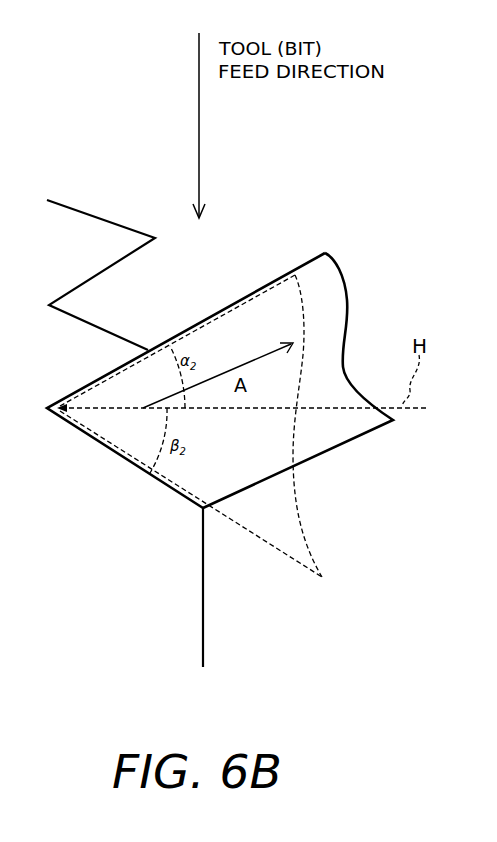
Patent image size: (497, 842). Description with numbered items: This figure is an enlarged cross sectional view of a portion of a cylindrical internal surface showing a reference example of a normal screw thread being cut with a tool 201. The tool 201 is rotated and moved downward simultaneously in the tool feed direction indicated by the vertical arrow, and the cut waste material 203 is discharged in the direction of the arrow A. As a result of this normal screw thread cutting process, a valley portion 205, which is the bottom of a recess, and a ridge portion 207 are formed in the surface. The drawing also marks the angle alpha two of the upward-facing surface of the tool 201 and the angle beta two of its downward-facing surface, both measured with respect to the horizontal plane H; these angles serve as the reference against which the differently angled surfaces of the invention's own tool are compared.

The tool 201 is at (242, 527).
The cut waste material 203 is at (345, 443).
The valley portion 205 is at (72, 423).
The ridge portion 207 is at (110, 343).